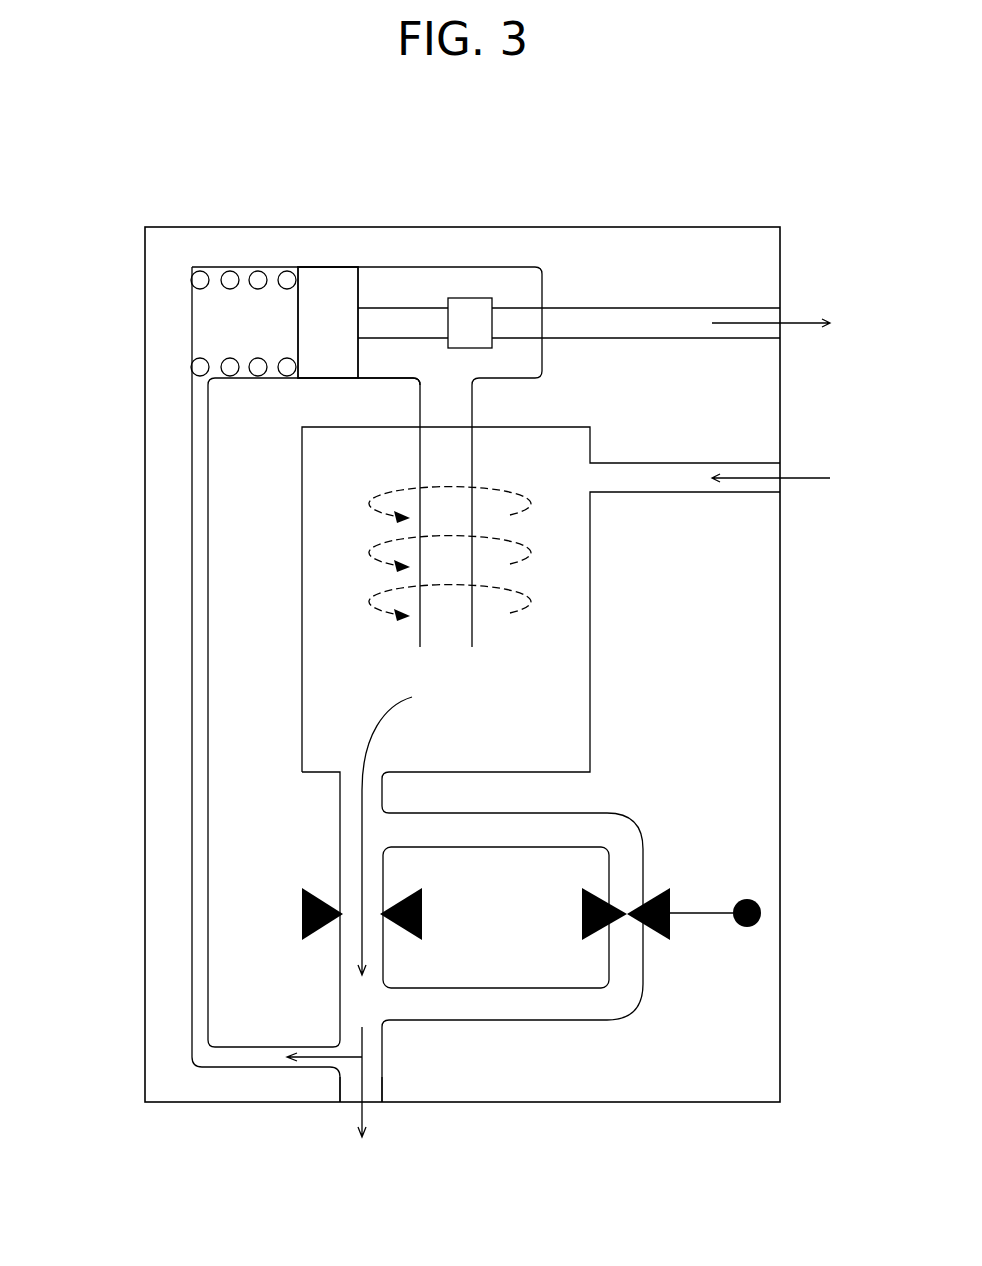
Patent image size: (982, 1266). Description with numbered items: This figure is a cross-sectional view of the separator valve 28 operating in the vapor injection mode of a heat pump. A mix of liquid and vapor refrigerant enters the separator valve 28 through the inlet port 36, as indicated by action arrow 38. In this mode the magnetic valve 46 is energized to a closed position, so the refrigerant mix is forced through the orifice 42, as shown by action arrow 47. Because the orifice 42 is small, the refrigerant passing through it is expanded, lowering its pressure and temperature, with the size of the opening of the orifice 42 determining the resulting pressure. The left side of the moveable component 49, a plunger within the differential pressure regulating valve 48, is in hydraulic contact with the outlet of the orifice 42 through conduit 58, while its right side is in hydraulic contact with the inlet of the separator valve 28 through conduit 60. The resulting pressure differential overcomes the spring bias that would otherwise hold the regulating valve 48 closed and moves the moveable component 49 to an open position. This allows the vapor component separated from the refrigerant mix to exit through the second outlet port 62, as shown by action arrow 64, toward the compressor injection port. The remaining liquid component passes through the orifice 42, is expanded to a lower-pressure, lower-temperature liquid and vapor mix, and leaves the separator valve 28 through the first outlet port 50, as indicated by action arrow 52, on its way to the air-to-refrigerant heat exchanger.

The separator valve 28 is at (517, 227).
The inlet port 36 is at (780, 492).
The action arrow 38 is at (807, 478).
The orifice 42 is at (422, 908).
The magnetic valve 46 is at (658, 888).
The action arrow 47 is at (362, 837).
The differential pressure regulating valve 48 is at (383, 265).
The moveable component 49 is at (312, 265).
The first outlet port 50 is at (343, 1102).
The action arrow 52 is at (362, 1077).
The conduit 58 is at (192, 690).
The conduit 60 is at (472, 628).
The second outlet port 62 is at (780, 337).
The action arrow 64 is at (798, 323).